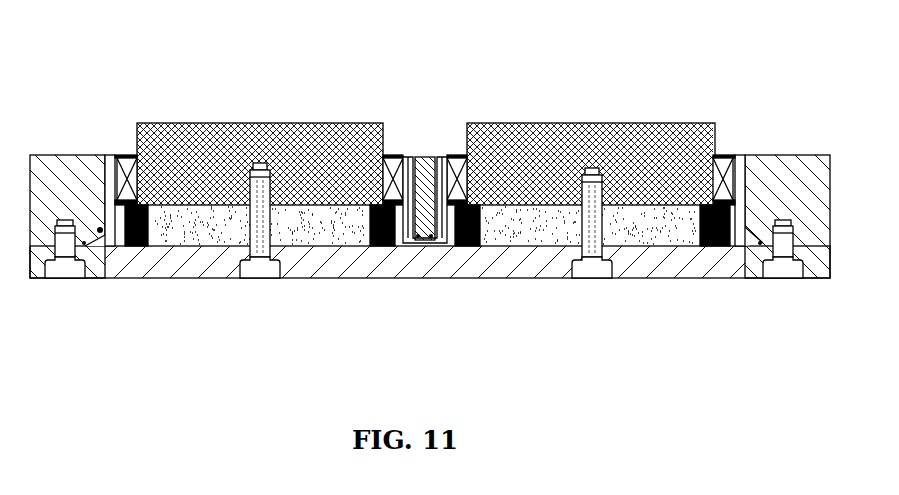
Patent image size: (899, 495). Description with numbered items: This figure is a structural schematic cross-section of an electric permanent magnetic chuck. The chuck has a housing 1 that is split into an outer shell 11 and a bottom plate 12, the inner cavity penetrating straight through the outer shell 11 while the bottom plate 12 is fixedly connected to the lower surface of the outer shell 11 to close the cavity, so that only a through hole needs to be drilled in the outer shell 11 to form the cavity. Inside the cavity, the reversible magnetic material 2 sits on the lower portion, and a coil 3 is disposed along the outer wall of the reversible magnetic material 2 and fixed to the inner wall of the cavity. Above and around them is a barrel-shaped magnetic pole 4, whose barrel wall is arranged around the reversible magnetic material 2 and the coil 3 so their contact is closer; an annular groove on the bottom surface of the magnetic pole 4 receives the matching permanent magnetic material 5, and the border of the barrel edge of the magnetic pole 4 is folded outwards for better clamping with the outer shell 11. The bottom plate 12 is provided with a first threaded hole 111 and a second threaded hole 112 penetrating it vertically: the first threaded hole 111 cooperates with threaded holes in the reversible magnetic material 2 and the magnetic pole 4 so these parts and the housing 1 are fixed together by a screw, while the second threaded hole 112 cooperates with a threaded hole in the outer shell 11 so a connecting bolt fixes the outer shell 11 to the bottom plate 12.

The housing 1 is at (75, 170).
The outer shell 11 is at (780, 203).
The first threaded hole 111 is at (260, 282).
The second threaded hole 112 is at (62, 282).
The bottom plate 12 is at (352, 267).
The reversible magnetic material 2 is at (335, 203).
The coil 3 is at (155, 207).
The magnetic pole 4 is at (528, 155).
The permanent magnetic material 5 is at (467, 157).